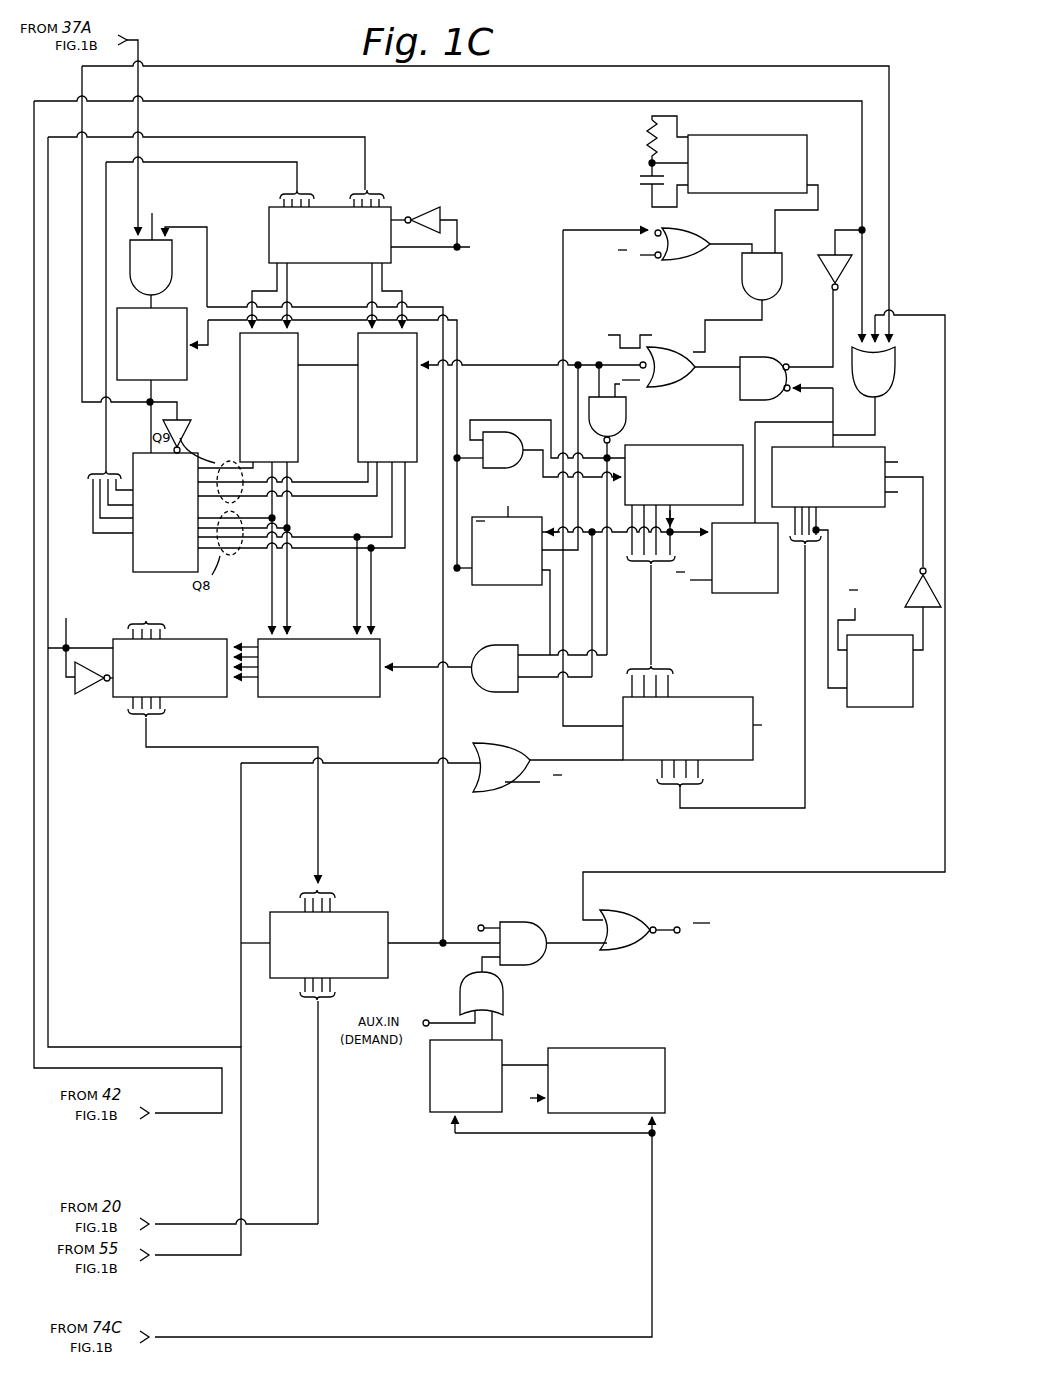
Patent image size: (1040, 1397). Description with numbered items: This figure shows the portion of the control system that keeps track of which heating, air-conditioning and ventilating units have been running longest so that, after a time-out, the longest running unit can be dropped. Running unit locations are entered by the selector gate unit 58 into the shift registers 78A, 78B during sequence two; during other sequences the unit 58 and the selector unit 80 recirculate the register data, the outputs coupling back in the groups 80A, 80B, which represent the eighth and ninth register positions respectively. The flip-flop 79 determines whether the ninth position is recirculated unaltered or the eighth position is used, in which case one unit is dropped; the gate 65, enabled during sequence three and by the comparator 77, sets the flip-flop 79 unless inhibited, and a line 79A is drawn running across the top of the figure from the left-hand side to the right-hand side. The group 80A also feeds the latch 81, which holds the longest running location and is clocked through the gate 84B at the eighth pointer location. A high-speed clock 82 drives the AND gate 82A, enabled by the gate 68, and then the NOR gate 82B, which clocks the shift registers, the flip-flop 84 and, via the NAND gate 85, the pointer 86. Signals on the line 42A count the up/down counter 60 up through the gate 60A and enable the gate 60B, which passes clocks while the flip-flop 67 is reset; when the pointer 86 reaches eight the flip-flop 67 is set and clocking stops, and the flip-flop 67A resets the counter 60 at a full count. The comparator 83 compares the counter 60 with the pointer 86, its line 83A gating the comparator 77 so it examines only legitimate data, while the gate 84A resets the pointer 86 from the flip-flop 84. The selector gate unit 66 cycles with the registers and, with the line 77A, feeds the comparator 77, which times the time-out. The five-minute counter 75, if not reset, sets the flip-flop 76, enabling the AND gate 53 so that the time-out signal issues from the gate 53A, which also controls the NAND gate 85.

The AND gate 53 is at (525, 952).
The gate 53A is at (628, 950).
The selector gate unit 58 is at (398, 204).
The up/down counter 60 is at (858, 513).
The gate 60A is at (887, 362).
The gate 60B is at (774, 388).
The gate 65 is at (151, 276).
The selector gate unit 66 is at (200, 700).
The flip-flop 67 is at (751, 567).
The flip-flop 67A is at (892, 682).
The gate 68 is at (706, 232).
The 5-minute counter 75 is at (672, 1082).
The flip-flop 76 is at (462, 1075).
The comparator 77 is at (328, 968).
The line 77A is at (318, 1118).
The shift register 78A is at (300, 410).
The shift register 78B is at (355, 430).
The flip-flop 79 is at (149, 357).
The line 79A is at (692, 68).
The selector unit 80 is at (128, 556).
The group 80A is at (242, 556).
The group 80B is at (225, 462).
The latch 81 is at (336, 704).
The high-speed clock 82 is at (812, 152).
The AND gate 82A is at (774, 282).
The NOR gate 82B is at (678, 347).
The comparator 83 is at (706, 694).
The line 83A is at (545, 748).
The flip-flop 84 is at (506, 565).
The gate 84A is at (495, 430).
The gate 84B is at (508, 677).
The NAND gate 85 is at (617, 415).
The pointer 86 is at (700, 440).
The line 42A is at (570, 104).